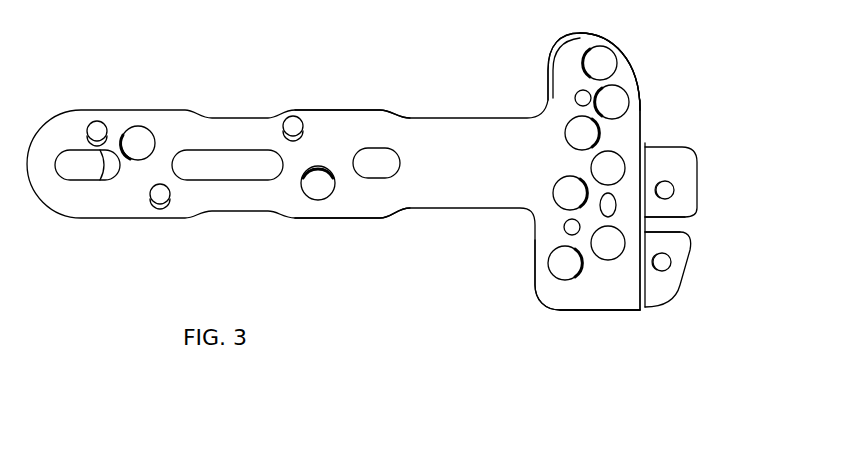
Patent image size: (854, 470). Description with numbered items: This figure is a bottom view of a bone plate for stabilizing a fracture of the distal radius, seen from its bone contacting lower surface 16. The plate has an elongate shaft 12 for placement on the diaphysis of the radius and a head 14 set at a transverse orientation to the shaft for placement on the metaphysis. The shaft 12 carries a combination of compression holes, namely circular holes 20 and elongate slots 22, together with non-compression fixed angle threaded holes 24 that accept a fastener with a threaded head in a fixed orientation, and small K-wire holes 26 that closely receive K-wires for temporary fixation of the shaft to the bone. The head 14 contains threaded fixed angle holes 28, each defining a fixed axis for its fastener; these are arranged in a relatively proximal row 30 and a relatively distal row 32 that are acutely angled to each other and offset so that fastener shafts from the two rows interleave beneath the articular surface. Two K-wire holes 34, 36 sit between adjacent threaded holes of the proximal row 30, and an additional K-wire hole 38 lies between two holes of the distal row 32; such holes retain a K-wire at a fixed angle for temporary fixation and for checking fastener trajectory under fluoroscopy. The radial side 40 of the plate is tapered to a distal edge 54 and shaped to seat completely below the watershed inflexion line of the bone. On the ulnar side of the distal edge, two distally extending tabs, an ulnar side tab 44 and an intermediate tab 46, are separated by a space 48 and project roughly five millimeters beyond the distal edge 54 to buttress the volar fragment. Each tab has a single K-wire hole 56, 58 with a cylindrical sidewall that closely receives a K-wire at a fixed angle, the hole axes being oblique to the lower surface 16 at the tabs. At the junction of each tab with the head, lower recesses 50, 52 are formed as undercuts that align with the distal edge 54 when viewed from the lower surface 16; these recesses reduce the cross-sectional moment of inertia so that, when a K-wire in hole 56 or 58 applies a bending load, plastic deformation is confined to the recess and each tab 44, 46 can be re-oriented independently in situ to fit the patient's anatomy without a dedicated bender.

The shaft 12 is at (323, 108).
The head 14 is at (632, 74).
The bone contacting lower surface 16 is at (367, 200).
The circular compression hole 20 is at (80, 168).
The elongate slot 22 is at (217, 162).
The threaded hole 24 is at (138, 143).
The K-wire hole 26 is at (97, 130).
The threaded hole 28 is at (563, 133).
The proximal row 30 is at (555, 288).
The distal row 32 is at (605, 272).
The K-wire hole 34 is at (564, 227).
The K-wire hole 36 is at (575, 97).
The K-wire hole 38 is at (612, 198).
The radial side 40 is at (634, 86).
The ulnar side tab 44 is at (680, 272).
The intermediate tab 46 is at (688, 173).
The space 48 is at (677, 224).
The lower recess 50 is at (647, 290).
The lower recess 52 is at (644, 165).
The distal edge 54 is at (640, 107).
The K-wire hole 56 is at (666, 262).
The K-wire hole 58 is at (668, 190).